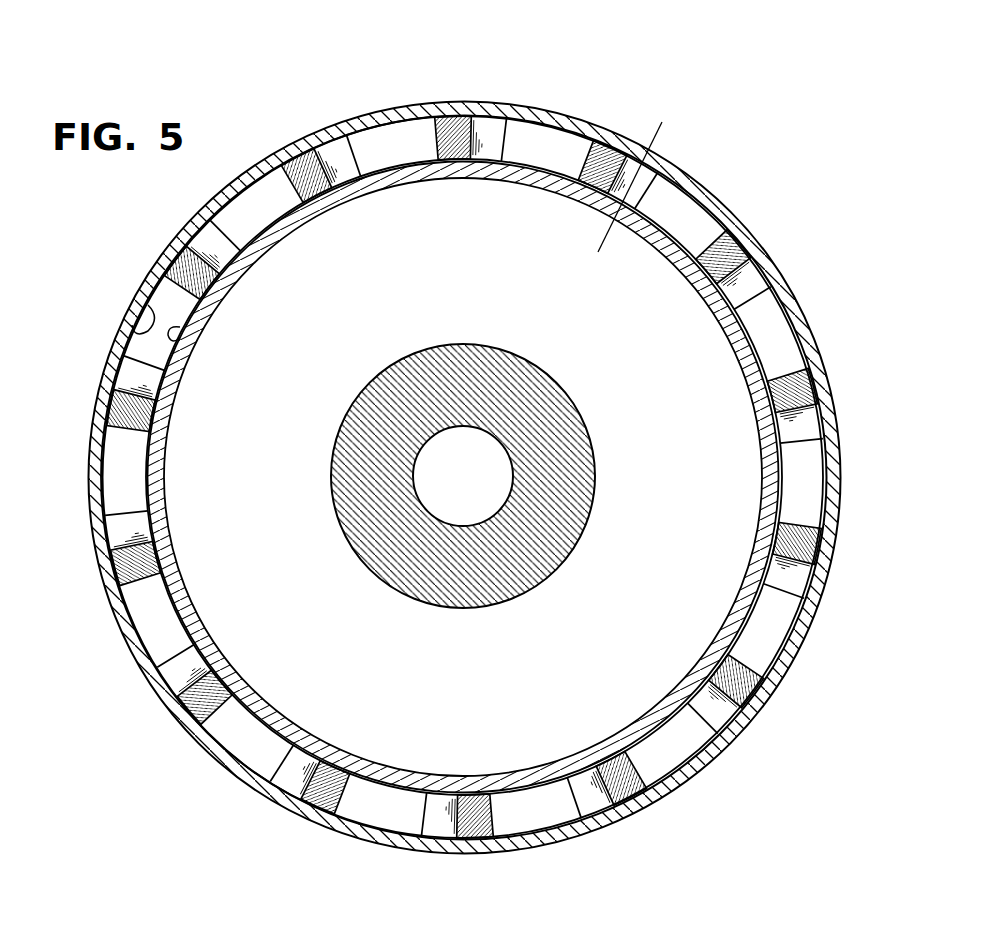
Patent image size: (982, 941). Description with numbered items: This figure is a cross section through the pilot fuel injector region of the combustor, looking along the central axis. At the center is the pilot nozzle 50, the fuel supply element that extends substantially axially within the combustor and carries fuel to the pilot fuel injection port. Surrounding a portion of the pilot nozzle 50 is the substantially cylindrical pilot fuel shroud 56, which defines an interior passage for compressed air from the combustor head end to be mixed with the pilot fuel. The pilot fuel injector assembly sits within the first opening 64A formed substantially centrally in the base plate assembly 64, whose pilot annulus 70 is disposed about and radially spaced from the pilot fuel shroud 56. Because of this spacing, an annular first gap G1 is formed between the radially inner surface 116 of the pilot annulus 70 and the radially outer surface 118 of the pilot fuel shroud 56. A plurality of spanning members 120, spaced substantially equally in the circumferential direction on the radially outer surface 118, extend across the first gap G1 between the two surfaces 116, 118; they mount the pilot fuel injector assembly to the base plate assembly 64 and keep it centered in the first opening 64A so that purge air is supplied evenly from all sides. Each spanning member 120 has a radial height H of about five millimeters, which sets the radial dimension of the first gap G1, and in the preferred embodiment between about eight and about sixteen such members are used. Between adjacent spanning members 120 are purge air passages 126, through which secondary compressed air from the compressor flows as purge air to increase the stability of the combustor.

The pilot nozzle 50 is at (473, 362).
The pilot fuel shroud 56 is at (285, 225).
The base plate assembly 64 is at (571, 109).
The first opening 64A is at (540, 128).
The pilot annulus 70 is at (384, 112).
The radially inner surface 116 is at (148, 305).
The radially outer surface 118 is at (180, 327).
The spanning members 120 is at (297, 157).
The purge air passages 126 is at (686, 230).
The first gap G1 is at (392, 158).
The height H is at (662, 122).